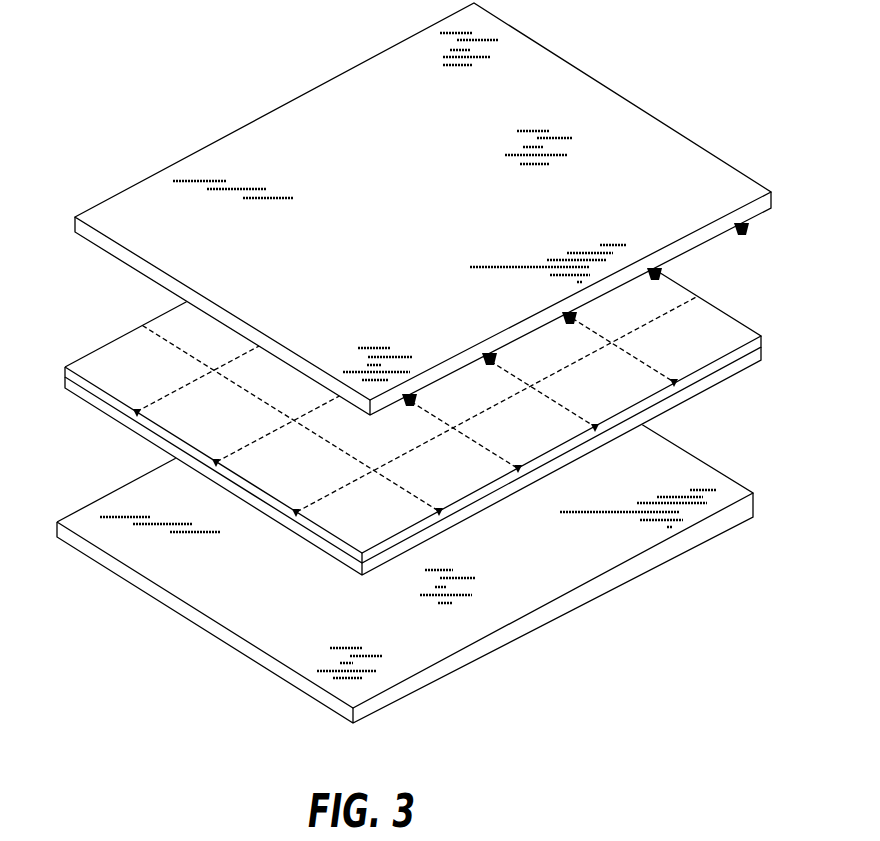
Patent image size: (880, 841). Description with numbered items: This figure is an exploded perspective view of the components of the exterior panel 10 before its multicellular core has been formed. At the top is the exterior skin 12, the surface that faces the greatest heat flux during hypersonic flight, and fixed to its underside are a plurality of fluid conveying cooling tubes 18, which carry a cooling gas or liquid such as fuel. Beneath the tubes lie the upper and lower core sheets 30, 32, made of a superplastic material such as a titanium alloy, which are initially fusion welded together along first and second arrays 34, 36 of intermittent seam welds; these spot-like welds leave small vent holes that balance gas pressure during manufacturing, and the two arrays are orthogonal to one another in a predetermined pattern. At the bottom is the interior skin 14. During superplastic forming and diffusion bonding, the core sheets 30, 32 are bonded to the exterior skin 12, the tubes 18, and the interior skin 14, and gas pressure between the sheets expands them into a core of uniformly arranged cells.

The exterior panel 10 is at (184, 44).
The exterior skin 12 is at (633, 125).
The interior skin 14 is at (733, 488).
The fluid conveying cooling tubes 18 is at (750, 236).
The upper core sheet 30 is at (752, 331).
The lower core sheet 32 is at (765, 364).
The first array of intermittent seam welds 34 is at (174, 348).
The second array of intermittent seam welds 36 is at (181, 393).